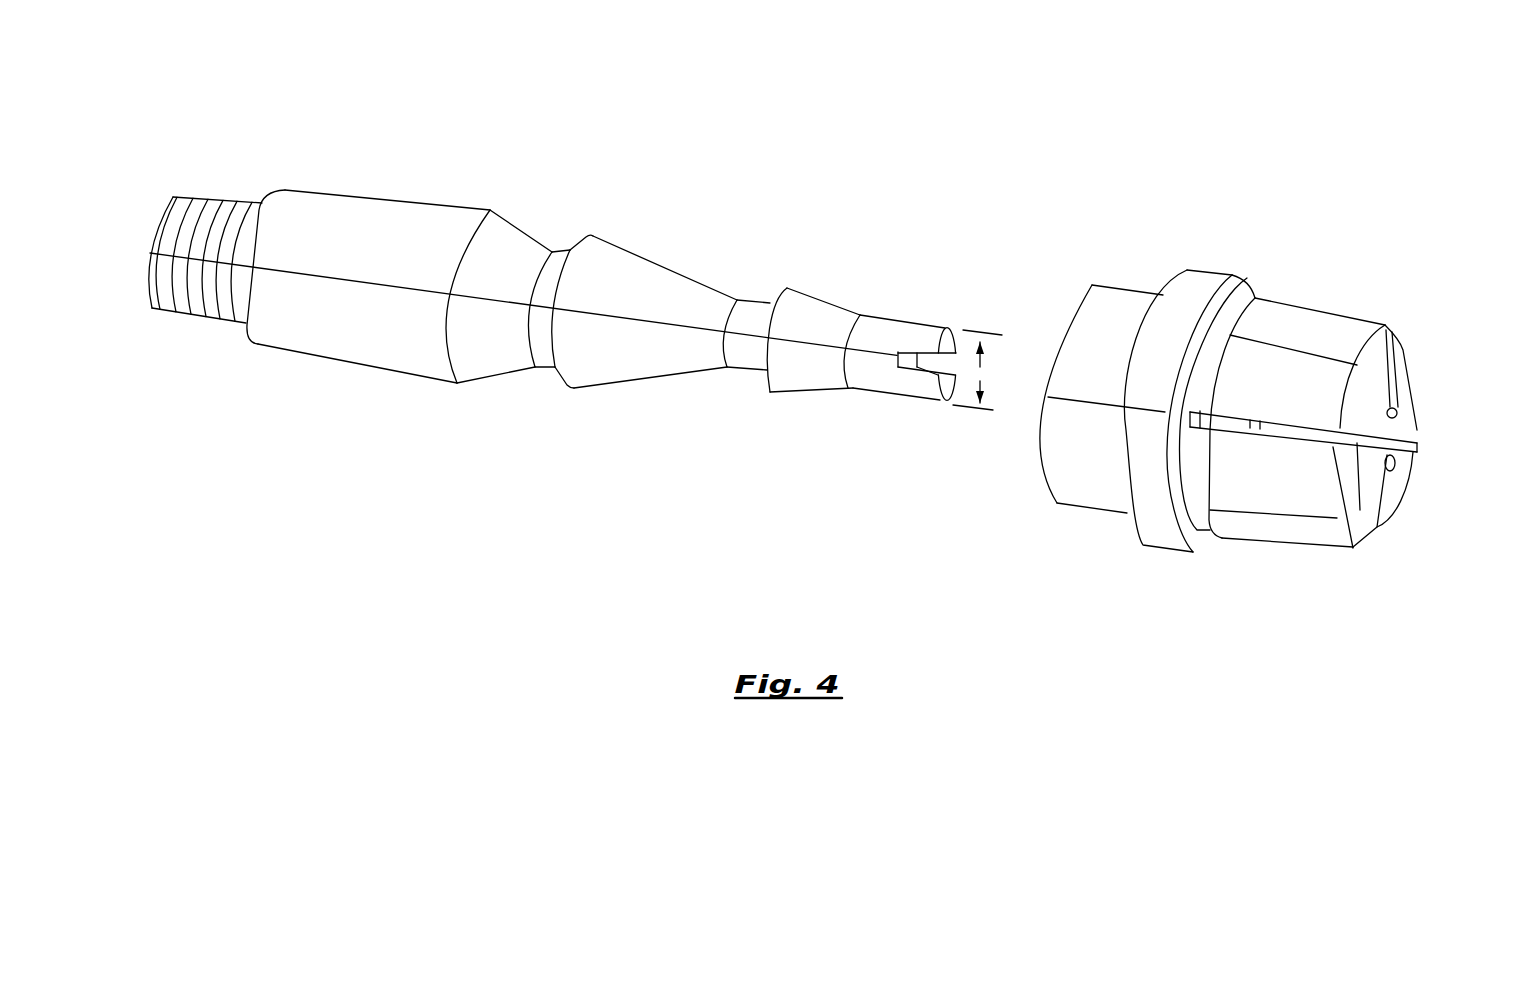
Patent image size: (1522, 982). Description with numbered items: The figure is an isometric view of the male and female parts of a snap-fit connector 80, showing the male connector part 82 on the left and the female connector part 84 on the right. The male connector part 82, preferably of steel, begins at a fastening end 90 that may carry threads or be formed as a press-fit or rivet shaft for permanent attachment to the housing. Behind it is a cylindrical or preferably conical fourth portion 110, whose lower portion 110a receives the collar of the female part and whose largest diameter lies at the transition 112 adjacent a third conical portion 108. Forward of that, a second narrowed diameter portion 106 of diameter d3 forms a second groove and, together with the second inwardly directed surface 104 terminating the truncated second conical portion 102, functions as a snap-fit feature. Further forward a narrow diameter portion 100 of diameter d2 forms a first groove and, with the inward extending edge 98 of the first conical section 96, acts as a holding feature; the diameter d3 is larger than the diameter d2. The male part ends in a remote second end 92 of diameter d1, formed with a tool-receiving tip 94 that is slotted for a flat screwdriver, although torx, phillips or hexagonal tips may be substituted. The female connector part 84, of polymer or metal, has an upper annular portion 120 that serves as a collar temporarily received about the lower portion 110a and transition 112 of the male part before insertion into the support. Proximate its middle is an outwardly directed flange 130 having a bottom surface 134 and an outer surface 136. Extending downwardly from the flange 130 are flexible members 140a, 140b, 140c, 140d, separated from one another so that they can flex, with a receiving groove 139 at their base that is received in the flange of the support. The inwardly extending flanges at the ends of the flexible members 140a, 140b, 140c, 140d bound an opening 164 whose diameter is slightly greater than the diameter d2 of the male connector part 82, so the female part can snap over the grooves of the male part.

The connector 80 is at (1158, 217).
The male connector part 82 is at (427, 385).
The female connector part 84 is at (1102, 527).
The fastening end 90 is at (192, 183).
The second end 92 is at (893, 312).
The tool-receiving tip 94 is at (912, 408).
The first conical section 96 is at (812, 292).
The inward extending edge 98 is at (778, 290).
The narrow diameter portion 100 is at (742, 372).
The second conical portion 102 is at (660, 258).
The second inwardly directed surface 104 is at (583, 238).
The second narrowed diameter portion 106 is at (543, 365).
The third conical portion 108 is at (509, 210).
The fourth portion 110 is at (379, 196).
The lower portion 110a is at (433, 353).
The transition 112 is at (463, 218).
The upper annular portion 120 is at (1105, 298).
The flange 130 is at (1202, 263).
The bottom surface 134 is at (1236, 287).
The outer surface 136 is at (1157, 532).
The receiving groove 139 is at (1192, 483).
The flexible member 140a is at (1307, 488).
The flexible member 140b is at (1343, 338).
The flexible member 140c is at (1390, 497).
The flexible member 140d is at (1410, 377).
The opening 164 is at (1393, 427).
The diameter of second end d1 is at (977, 370).
The diameter of narrow diameter portion d2 is at (750, 296).
The diameter of second narrowed diameter portion d3 is at (561, 243).